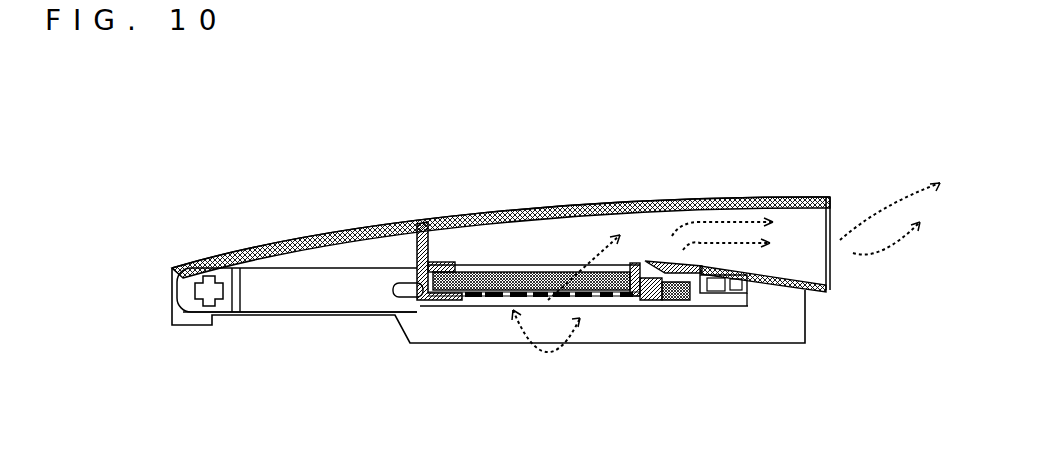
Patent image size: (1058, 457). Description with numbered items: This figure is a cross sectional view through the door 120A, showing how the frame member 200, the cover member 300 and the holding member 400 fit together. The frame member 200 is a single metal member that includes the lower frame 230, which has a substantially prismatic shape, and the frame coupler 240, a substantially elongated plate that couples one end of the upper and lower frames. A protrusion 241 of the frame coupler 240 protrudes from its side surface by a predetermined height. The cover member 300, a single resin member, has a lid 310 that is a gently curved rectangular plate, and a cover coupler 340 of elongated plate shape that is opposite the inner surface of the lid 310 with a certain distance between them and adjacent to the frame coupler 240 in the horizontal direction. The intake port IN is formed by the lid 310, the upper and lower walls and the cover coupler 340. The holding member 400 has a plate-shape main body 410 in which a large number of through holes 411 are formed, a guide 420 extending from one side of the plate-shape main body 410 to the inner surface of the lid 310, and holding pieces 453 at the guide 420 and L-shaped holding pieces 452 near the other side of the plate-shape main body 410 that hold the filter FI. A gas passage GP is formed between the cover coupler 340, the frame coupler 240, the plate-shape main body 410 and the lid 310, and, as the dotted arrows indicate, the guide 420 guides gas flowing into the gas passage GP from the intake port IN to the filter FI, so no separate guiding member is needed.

The door 120A is at (863, 76).
The frame member 200 is at (262, 303).
The lower frame 230 is at (305, 287).
The frame coupler 240 is at (668, 307).
The protrusion 241 is at (656, 261).
The cover member 300 is at (782, 197).
The lid 310 is at (540, 197).
The cover coupler 340 is at (777, 289).
The holding member 400 is at (418, 224).
The plate-shape main body 410 is at (648, 303).
The through holes 411 is at (473, 292).
The guide 420 is at (413, 250).
The holding piece 452 is at (630, 263).
The holding piece 453 is at (442, 262).
The filter FI is at (478, 263).
The gas passage GP is at (545, 253).
The intake port IN is at (840, 262).